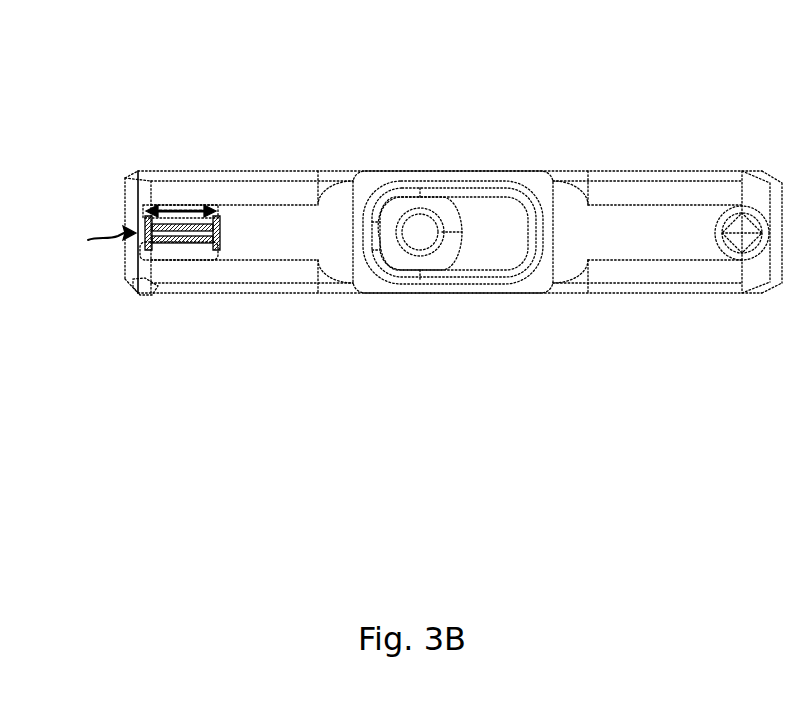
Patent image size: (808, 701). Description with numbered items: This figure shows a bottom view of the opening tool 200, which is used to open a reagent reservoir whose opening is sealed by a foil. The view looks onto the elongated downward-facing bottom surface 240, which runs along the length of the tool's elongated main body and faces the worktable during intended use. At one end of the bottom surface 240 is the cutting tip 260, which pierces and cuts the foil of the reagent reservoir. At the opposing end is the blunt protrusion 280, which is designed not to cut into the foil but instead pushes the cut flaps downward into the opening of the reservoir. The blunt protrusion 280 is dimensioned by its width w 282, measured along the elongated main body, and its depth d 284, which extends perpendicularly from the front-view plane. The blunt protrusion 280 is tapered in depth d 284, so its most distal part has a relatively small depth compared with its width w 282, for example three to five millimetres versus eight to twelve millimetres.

The opening tool 200 is at (131, 99).
The bottom surface 240 is at (297, 254).
The cutting tip 260 is at (732, 251).
The blunt protrusion 280 is at (182, 243).
The width w 282 is at (182, 207).
The depth d 284 is at (95, 254).